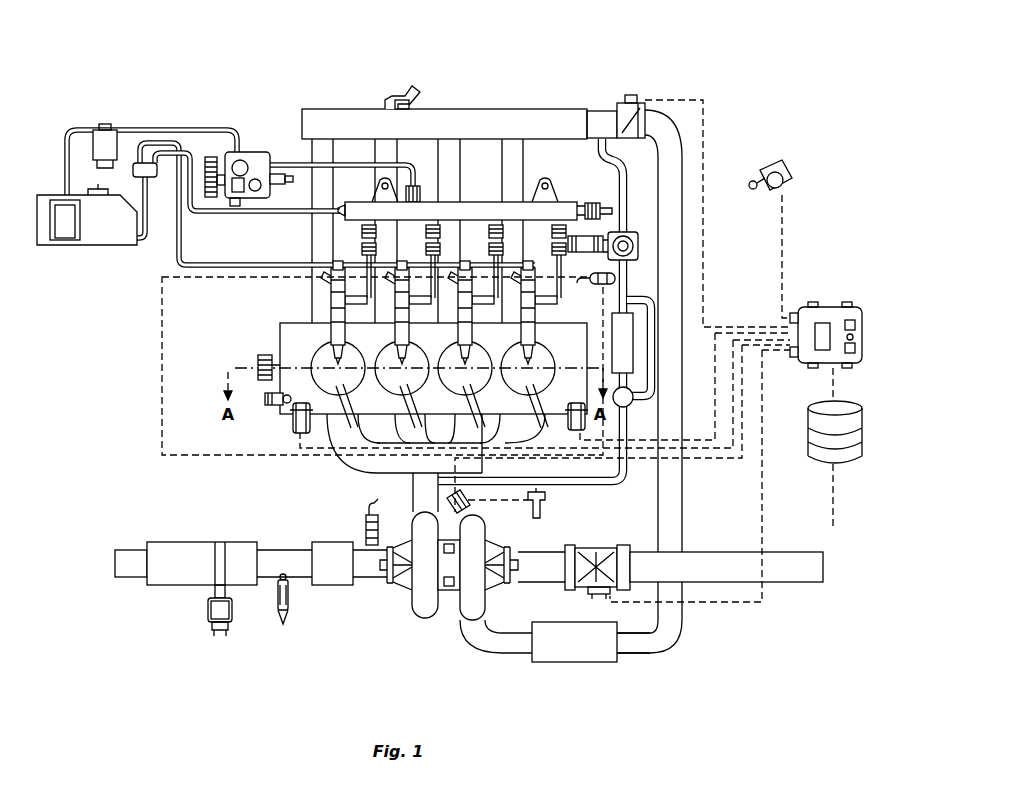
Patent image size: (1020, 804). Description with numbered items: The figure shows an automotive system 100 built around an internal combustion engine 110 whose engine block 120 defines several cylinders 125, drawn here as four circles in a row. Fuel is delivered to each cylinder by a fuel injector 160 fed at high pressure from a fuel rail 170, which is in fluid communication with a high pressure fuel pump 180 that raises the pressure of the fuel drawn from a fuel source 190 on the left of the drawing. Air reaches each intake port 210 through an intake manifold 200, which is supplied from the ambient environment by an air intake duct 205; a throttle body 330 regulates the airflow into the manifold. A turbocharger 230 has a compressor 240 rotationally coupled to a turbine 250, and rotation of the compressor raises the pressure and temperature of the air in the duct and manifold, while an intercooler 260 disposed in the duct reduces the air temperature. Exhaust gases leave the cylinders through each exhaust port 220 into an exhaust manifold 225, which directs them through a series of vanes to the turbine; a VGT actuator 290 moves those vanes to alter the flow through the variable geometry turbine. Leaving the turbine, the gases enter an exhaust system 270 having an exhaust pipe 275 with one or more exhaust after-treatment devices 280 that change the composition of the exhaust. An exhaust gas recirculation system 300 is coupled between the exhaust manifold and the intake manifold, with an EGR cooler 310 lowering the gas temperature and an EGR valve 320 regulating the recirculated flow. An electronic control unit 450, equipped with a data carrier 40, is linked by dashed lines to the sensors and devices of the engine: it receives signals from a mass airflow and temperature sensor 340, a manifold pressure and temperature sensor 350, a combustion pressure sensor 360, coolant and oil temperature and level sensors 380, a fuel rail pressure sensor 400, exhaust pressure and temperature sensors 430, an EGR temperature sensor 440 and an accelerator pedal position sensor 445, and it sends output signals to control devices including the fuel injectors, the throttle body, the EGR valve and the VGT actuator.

The automotive system 100 is at (219, 97).
The internal combustion engine 110 is at (542, 99).
The engine block 120 is at (280, 331).
The cylinder 125 is at (547, 352).
The fuel injector 160 is at (332, 307).
The fuel rail 170 is at (345, 208).
The high pressure fuel pump 180 is at (250, 150).
The fuel source 190 is at (108, 227).
The intake manifold 200 is at (453, 125).
The air intake duct 205 is at (792, 572).
The intake port 210 is at (328, 326).
The exhaust port 220 is at (332, 427).
The exhaust manifold 225 is at (351, 522).
The turbocharger 230 is at (462, 576).
The compressor 240 is at (478, 590).
The turbine 250 is at (423, 582).
The intercooler 260 is at (597, 650).
The exhaust system 270 is at (220, 577).
The exhaust pipe 275 is at (128, 565).
The exhaust after-treatment device 280 is at (173, 565).
The VGT actuator 290 is at (470, 505).
The exhaust gas recirculation system 300 is at (596, 492).
The EGR cooler 310 is at (628, 355).
The EGR valve 320 is at (632, 232).
The throttle body 330 is at (632, 95).
The mass airflow and temperature sensor 340 is at (592, 590).
The manifold pressure and temperature sensor 350 is at (392, 93).
The combustion pressure sensor 360 is at (350, 428).
The coolant and oil temperature and level sensors 380 is at (293, 420).
The fuel rail pressure sensor 400 is at (614, 204).
The exhaust pressure and temperature sensors 430 is at (285, 622).
The EGR temperature sensor 440 is at (618, 277).
The accelerator pedal position sensor 445 is at (790, 165).
The electronic control unit 450 is at (832, 302).
The data carrier 40 is at (835, 459).